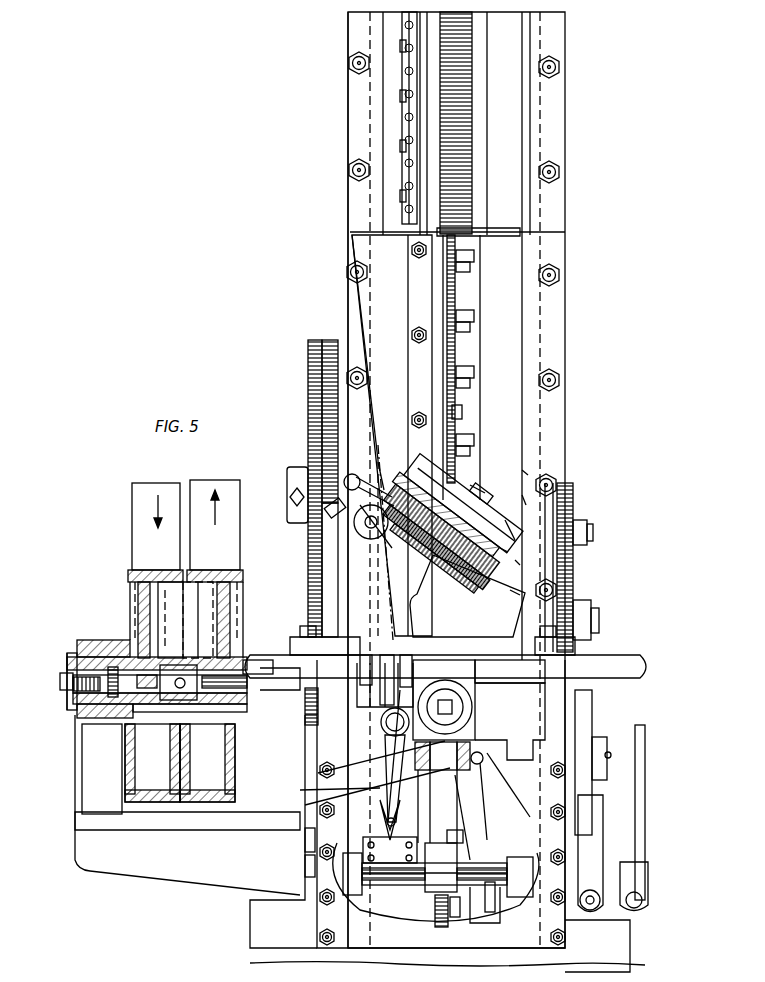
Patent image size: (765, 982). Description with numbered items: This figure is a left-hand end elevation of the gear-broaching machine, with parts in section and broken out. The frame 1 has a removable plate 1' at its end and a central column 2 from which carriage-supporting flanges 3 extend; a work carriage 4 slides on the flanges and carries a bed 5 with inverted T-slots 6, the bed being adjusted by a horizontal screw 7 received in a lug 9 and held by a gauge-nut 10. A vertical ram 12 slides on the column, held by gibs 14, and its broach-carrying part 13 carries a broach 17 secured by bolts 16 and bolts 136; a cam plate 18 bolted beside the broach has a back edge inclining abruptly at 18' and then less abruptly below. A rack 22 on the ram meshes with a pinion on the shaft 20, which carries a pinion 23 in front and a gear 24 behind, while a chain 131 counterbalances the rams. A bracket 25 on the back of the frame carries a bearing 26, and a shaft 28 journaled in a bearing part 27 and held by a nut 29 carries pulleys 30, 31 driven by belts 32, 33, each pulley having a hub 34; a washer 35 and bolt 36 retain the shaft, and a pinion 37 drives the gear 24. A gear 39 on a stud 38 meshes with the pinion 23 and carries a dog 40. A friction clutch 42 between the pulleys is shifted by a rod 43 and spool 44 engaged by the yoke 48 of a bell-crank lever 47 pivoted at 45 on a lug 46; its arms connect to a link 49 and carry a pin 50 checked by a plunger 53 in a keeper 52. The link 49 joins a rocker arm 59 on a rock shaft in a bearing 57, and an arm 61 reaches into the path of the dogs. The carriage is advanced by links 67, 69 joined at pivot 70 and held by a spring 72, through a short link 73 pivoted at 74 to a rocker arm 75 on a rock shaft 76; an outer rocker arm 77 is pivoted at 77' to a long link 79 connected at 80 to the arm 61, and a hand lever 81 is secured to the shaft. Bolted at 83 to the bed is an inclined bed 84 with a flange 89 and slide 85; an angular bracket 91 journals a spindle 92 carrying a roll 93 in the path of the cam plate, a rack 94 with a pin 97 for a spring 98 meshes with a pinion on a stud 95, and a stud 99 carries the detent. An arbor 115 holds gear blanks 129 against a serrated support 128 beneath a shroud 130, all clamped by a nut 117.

The frame 1 is at (283, 831).
The removable plate 1' is at (447, 944).
The column 2 is at (456, 480).
The carriage-supporting flanges 3 is at (340, 745).
The work carriage 4 is at (510, 721).
The bed 5 is at (510, 671).
The inverted T-slots 6 is at (386, 658).
The horizontal screw 7 is at (452, 707).
The lug 9 is at (310, 570).
The gauge-nut 10 is at (472, 726).
The vertical ram 12 is at (499, 367).
The broach-carrying part 13 is at (440, 242).
The gibs 14 is at (451, 480).
The bolts 16 is at (470, 262).
The broach 17 is at (456, 412).
The cam plate 18 is at (392, 435).
The upper inclined edge of cam plate 18' is at (335, 347).
The shaft 20 is at (290, 488).
The rack 22 is at (462, 130).
The pinion 23 is at (566, 488).
The gear 24 is at (308, 378).
The bracket 25 is at (80, 819).
The bearing 26 is at (122, 640).
The bearing part 27 is at (378, 760).
The shaft 28 is at (68, 672).
The nut 29 is at (358, 686).
The pulley 30 is at (130, 574).
The pulley 31 is at (232, 582).
The belt 32 is at (140, 528).
The belt 33 is at (230, 528).
The hub 34 is at (78, 710).
The washer 35 is at (68, 660).
The bolt 36 is at (58, 684).
The pinion 37 is at (304, 708).
The stud 38 is at (600, 620).
The gear 39 is at (572, 578).
The dog 40 is at (586, 527).
The friction clutch 42 is at (168, 776).
The rod 43 is at (248, 664).
The spool 44 is at (364, 660).
The pivot 45 is at (395, 731).
The lug 46 is at (363, 762).
The bell-crank lever 47 is at (366, 791).
The yoke 48 is at (406, 658).
The link 49 is at (470, 812).
The pin 50 is at (440, 800).
The keeper 52 is at (390, 831).
The plunger 53 is at (305, 862).
The bearing 57 is at (497, 925).
The rocker arm 59 is at (480, 912).
The arm 61 is at (608, 768).
The links 67 is at (418, 758).
The links 69 is at (305, 834).
The pivot 70 is at (324, 790).
The spring 72 is at (484, 758).
The short link 73 is at (350, 858).
The pivot 74 is at (460, 868).
The rocker arm 75 is at (425, 878).
The rock shaft 76 is at (390, 880).
The rocker arm 77 is at (602, 853).
The pivot 77' is at (644, 858).
The long link 79 is at (594, 790).
The pivot 80 is at (612, 755).
The hand lever 81 is at (646, 735).
The bolted connection 83 is at (305, 632).
The bed 84 is at (467, 596).
The slide 85 is at (422, 555).
The flange 89 is at (560, 602).
The angular bracket 91 is at (352, 492).
The spindle 92 is at (364, 530).
The roll 93 is at (370, 528).
The rack 94 is at (515, 590).
The stud 95 is at (508, 548).
The pin 97 is at (512, 567).
The spring 98 is at (511, 536).
The stud 99 is at (382, 470).
The arbor 115 is at (482, 458).
The nut 117 is at (478, 488).
The serrated support 128 is at (536, 504).
The gear blanks 129 is at (537, 461).
The shroud 130 is at (482, 478).
The chain 131 is at (404, 119).
The bolts 136 is at (458, 408).